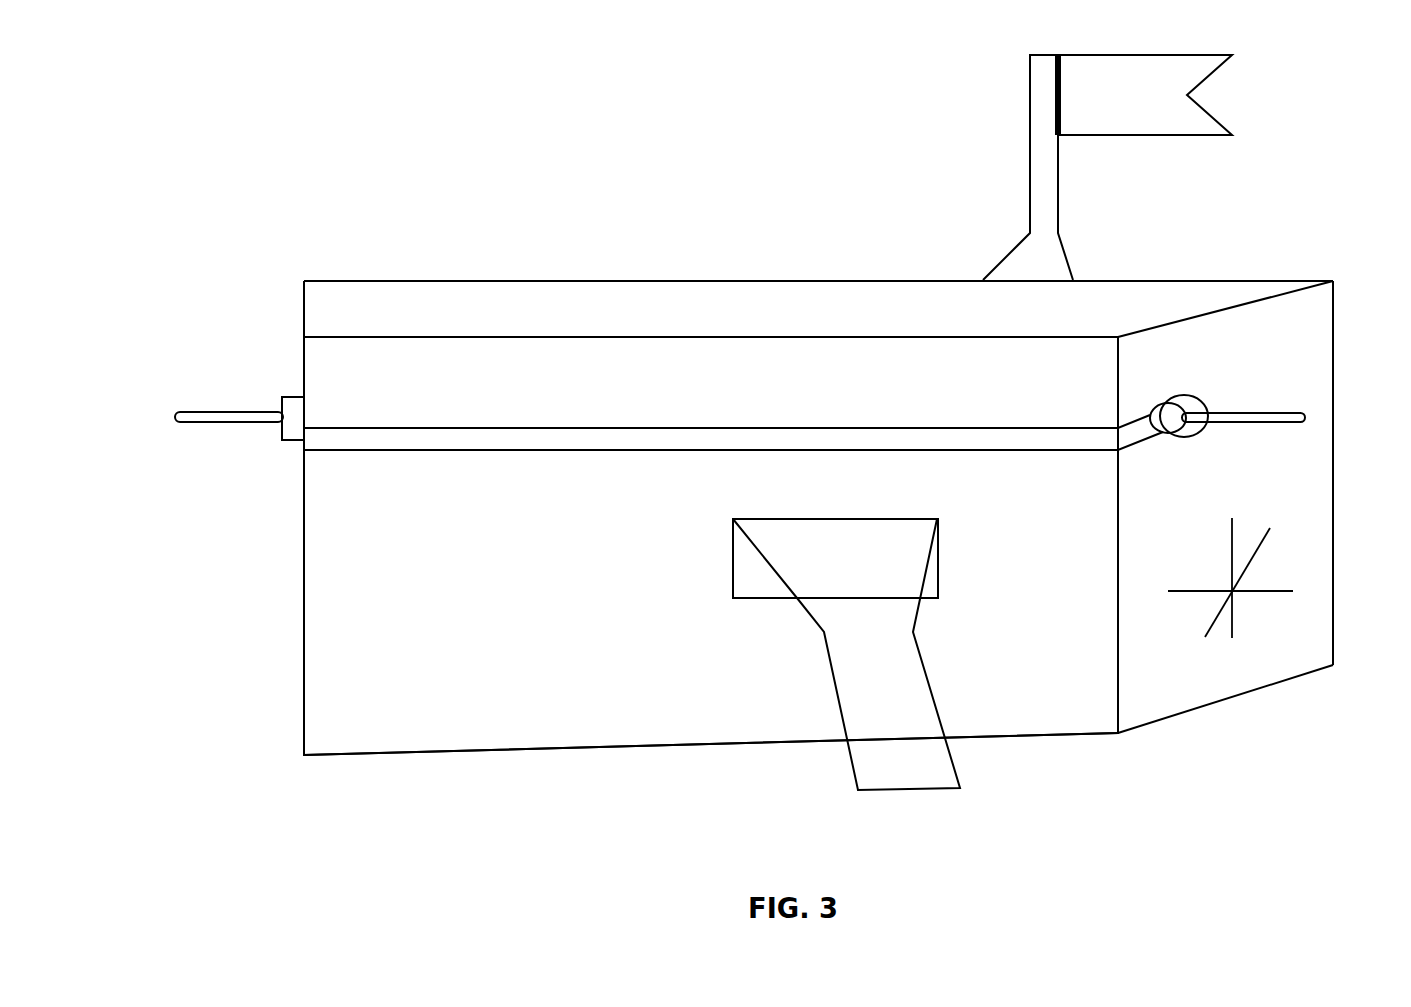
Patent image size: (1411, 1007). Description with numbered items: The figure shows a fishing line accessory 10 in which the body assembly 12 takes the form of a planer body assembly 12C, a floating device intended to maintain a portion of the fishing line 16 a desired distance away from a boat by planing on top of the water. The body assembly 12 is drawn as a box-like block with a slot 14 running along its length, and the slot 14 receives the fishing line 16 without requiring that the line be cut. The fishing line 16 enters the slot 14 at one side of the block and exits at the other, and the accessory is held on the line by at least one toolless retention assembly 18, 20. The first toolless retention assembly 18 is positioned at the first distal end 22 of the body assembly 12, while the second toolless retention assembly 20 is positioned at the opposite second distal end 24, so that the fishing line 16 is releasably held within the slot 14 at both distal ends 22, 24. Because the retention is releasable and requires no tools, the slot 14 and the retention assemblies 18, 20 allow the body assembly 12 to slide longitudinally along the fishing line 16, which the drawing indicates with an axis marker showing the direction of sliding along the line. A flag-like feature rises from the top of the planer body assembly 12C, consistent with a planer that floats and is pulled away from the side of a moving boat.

The fishing line accessory 10 is at (248, 187).
The body assembly 12 is at (818, 535).
The planer body assembly 12C is at (304, 597).
The slot 14 is at (553, 438).
The fishing line 16 is at (237, 420).
The first toolless retention assembly 18 is at (280, 405).
The second toolless retention assembly 20 is at (1200, 428).
The first distal end 22 is at (320, 473).
The second distal end 24 is at (1138, 413).